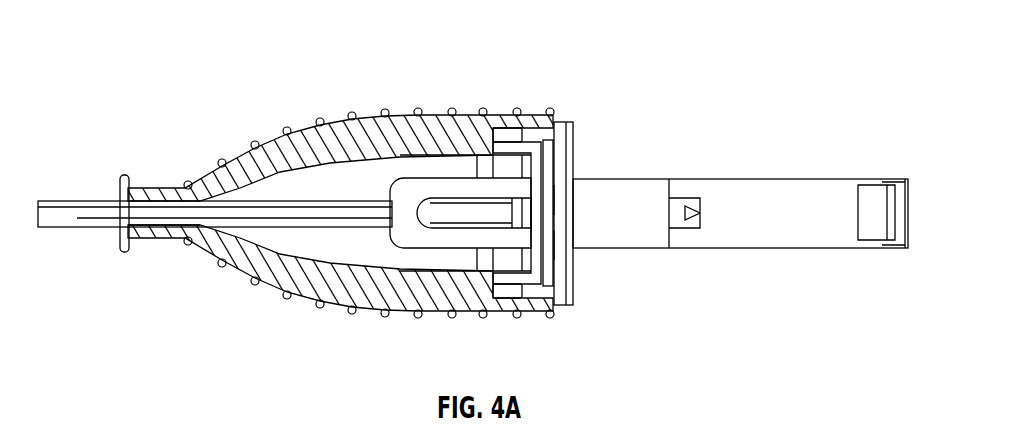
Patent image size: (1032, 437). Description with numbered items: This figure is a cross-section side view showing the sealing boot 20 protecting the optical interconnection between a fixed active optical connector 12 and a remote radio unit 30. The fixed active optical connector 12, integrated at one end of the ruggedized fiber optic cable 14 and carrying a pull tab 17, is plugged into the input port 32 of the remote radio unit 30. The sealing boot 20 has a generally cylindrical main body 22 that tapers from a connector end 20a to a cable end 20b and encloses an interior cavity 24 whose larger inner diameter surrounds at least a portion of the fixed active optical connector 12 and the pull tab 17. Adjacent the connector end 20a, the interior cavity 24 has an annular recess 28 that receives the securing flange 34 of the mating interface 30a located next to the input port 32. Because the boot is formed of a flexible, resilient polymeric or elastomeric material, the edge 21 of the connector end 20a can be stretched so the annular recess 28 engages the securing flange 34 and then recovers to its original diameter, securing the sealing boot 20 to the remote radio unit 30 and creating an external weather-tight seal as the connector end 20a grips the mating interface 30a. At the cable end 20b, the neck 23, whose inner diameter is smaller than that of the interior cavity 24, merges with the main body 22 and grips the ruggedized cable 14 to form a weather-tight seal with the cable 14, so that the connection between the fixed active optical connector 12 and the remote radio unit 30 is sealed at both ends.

The fixed active optical connector 12 is at (726, 199).
The fiber optic cable 14 is at (88, 221).
The pull tab 17 is at (418, 239).
The sealing boot 20 is at (349, 179).
The connector end 20a is at (570, 179).
The cable end 20b is at (105, 175).
The edge 21 is at (549, 138).
The main body 22 is at (341, 194).
The neck 23 is at (158, 233).
The interior cavity 24 is at (359, 170).
The annular recess 28 is at (500, 120).
The remote radio unit 30 is at (567, 163).
The mating interface 30a is at (544, 244).
The input port 32 is at (566, 198).
The securing flange 34 is at (515, 286).